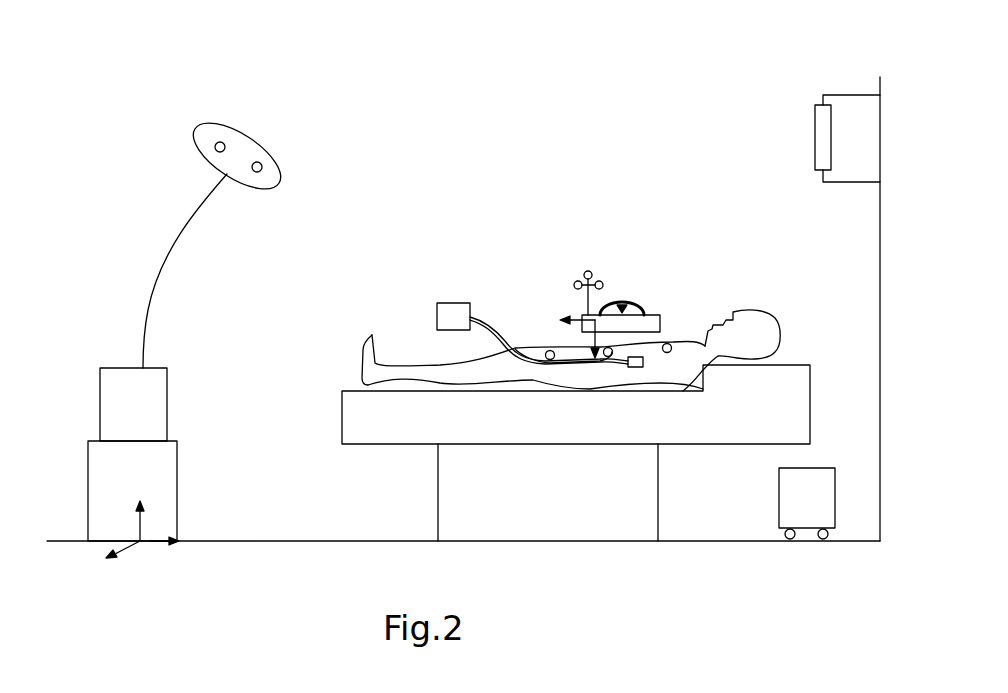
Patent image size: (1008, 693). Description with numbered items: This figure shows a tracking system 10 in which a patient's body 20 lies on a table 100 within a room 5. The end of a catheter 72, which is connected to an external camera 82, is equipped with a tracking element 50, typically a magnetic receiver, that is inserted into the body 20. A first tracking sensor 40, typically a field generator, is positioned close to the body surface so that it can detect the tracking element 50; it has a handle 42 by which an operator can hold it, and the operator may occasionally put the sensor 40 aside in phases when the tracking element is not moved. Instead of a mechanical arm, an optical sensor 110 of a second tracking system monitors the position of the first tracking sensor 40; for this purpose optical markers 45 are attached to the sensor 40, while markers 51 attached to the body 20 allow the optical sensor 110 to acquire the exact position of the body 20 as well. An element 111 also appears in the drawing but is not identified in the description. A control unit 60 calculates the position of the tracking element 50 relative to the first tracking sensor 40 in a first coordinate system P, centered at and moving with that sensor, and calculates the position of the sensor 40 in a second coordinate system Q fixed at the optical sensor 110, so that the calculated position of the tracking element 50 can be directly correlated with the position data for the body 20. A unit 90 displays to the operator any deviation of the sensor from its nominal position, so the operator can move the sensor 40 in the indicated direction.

The tracking system 10 is at (102, 47).
The optical sensor 110 is at (250, 142).
The camera stand 111 is at (87, 458).
The room 5 is at (247, 541).
The second coordinate system Q is at (153, 540).
The unit 90 is at (822, 132).
The table 100 is at (798, 388).
The control unit 60 is at (815, 485).
The body 20 is at (368, 363).
The external camera 82 is at (452, 303).
The catheter 72 is at (500, 330).
The tracking element 50 is at (637, 367).
The first tracking sensor 40 is at (652, 322).
The handle 42 is at (625, 310).
The optical markers 45 is at (590, 275).
The first coordinate system P is at (575, 318).
The markers 51 is at (672, 345).